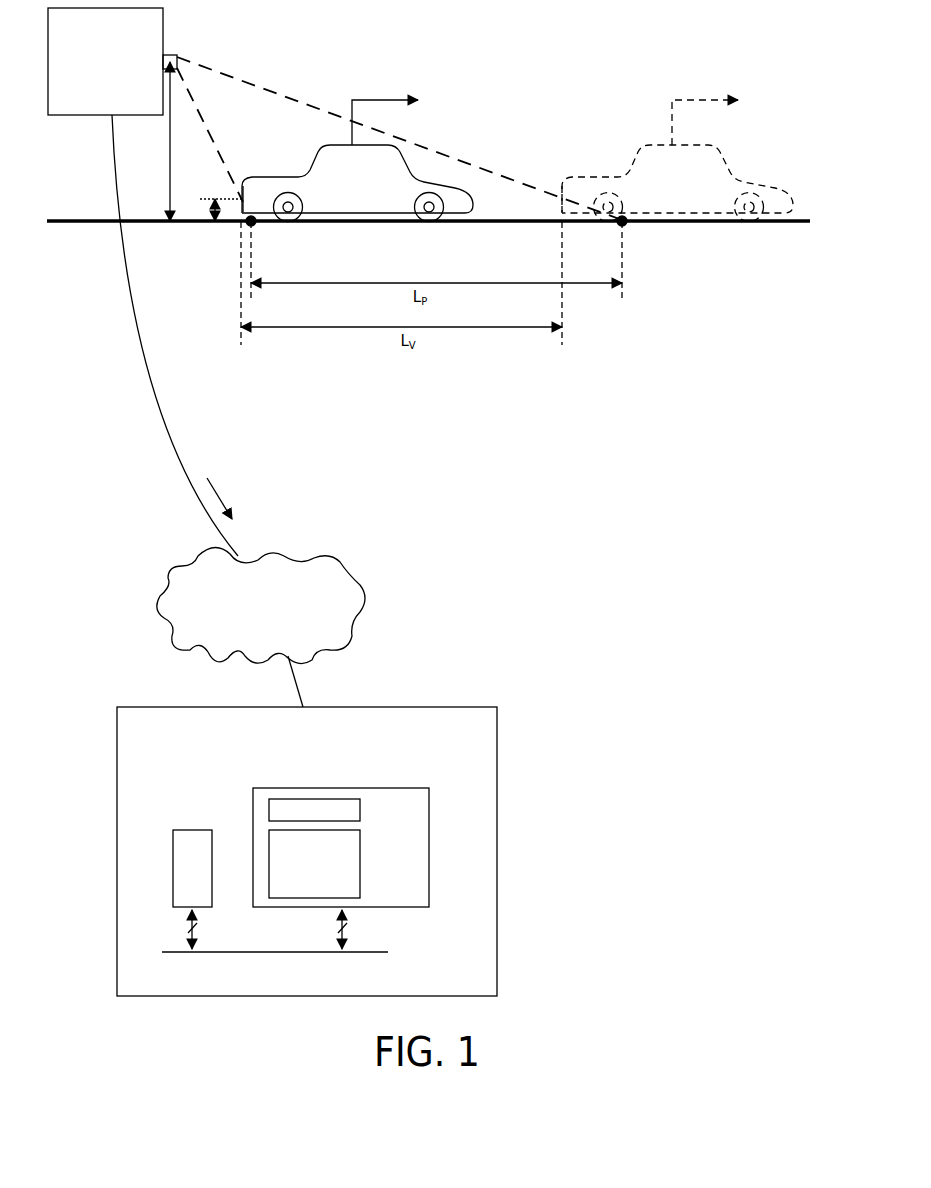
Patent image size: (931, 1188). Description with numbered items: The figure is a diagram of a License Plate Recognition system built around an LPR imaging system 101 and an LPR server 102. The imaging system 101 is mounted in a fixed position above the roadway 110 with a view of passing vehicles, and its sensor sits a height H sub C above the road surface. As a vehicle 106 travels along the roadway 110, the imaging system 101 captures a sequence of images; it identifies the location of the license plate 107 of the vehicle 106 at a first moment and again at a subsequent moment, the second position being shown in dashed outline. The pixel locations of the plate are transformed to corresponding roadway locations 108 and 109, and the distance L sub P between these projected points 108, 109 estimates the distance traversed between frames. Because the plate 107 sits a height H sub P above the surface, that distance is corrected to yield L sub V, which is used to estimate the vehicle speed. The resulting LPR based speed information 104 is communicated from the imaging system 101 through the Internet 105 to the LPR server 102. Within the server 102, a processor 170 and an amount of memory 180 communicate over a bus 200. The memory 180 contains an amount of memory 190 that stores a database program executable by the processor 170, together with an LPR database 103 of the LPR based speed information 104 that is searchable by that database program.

The LPR imaging system 101 is at (335, 282).
The LPR server 102 is at (307, 851).
The LPR database 103 is at (360, 863).
The LPR based speed information 104 is at (218, 497).
The Internet 105 is at (261, 605).
The vehicle 106 is at (517, 161).
The license plate 107 is at (240, 200).
The roadway location 108 is at (252, 224).
The roadway location 109 is at (623, 224).
The roadway 110 is at (80, 223).
The processor 170 is at (173, 866).
The memory 180 is at (429, 844).
The memory 190 is at (360, 810).
The bus 200 is at (382, 952).